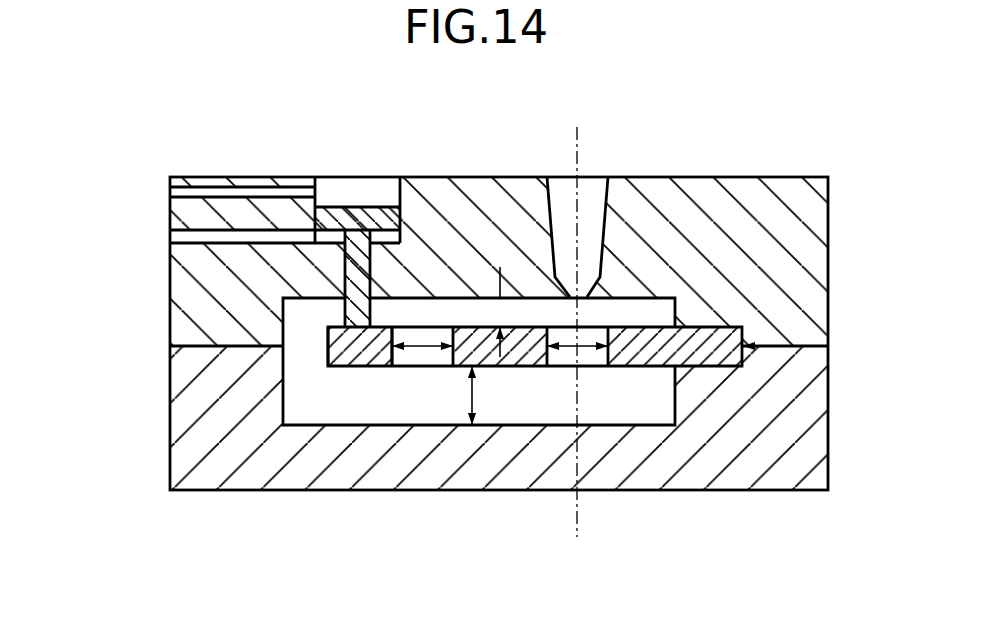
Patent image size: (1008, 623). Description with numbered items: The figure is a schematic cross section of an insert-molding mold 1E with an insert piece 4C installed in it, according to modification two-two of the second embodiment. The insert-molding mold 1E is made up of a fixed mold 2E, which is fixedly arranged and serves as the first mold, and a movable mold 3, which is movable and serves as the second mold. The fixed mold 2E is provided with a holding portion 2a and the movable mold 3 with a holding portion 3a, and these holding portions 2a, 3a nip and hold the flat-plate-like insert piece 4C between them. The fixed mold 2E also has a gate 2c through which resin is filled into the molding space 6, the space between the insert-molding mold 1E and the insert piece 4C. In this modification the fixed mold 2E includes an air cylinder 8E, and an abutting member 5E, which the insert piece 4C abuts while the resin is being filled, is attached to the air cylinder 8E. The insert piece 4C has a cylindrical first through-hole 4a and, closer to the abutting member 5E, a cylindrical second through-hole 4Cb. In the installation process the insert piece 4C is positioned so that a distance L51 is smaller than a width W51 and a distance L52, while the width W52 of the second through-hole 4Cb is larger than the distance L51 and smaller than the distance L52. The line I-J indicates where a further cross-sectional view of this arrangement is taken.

The insert-molding mold 1E is at (82, 245).
The fixed mold 2E is at (192, 261).
The movable mold 3 is at (192, 418).
The abutting member 5E is at (343, 281).
The air cylinder 8E is at (326, 174).
The molding space 6 is at (676, 393).
The first through-hole 4a is at (592, 330).
The insert piece 4C is at (346, 356).
The second through-hole 4Cb is at (407, 328).
The holding portion 2a is at (712, 336).
The holding portion 3a is at (712, 360).
The gate 2c is at (552, 212).
The distance L51 is at (500, 322).
The distance L52 is at (473, 393).
The width W51 is at (573, 353).
The width of second through-hole W52 is at (410, 352).
The section line I-J I is at (579, 143).
The section line I- J is at (579, 525).